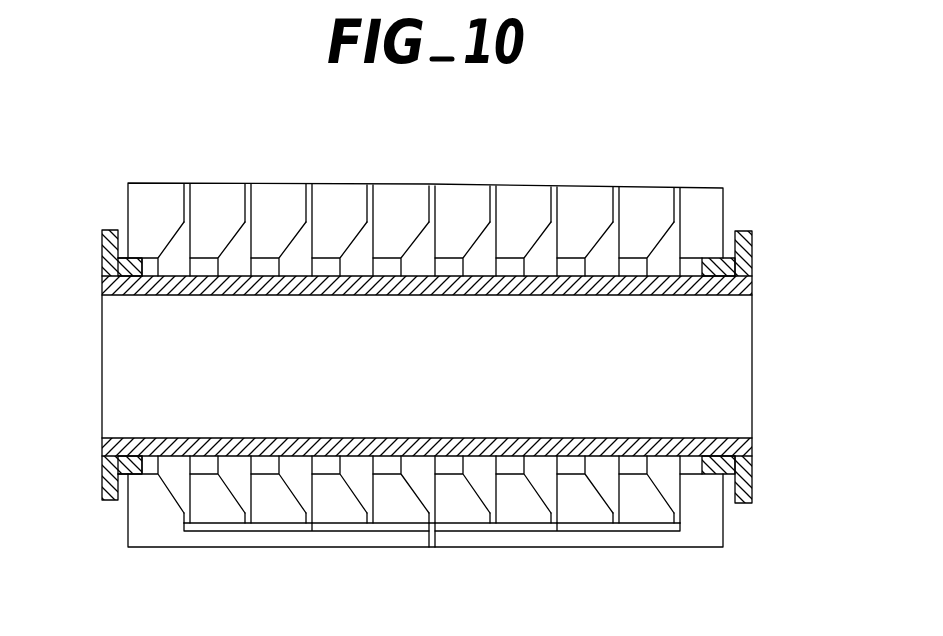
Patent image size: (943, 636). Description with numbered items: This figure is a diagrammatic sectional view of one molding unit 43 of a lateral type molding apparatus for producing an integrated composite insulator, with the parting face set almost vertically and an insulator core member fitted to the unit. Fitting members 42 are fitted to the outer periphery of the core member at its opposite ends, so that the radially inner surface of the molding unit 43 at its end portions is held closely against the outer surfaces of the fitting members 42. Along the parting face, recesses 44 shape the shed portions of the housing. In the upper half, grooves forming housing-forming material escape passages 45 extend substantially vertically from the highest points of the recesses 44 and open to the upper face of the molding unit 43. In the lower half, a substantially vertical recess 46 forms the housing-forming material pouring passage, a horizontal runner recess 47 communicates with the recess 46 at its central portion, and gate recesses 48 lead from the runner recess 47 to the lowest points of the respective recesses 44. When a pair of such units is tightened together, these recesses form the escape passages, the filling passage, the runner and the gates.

The fitting member 42 is at (751, 245).
The molding unit 43 is at (731, 190).
The recess for shaping shed portion 44 is at (170, 242).
The housing-forming material escape passage 45 is at (182, 202).
The recess for housing-forming material pouring passage 46 is at (431, 532).
The runner recess 47 is at (312, 535).
The gate recess 48 is at (181, 519).